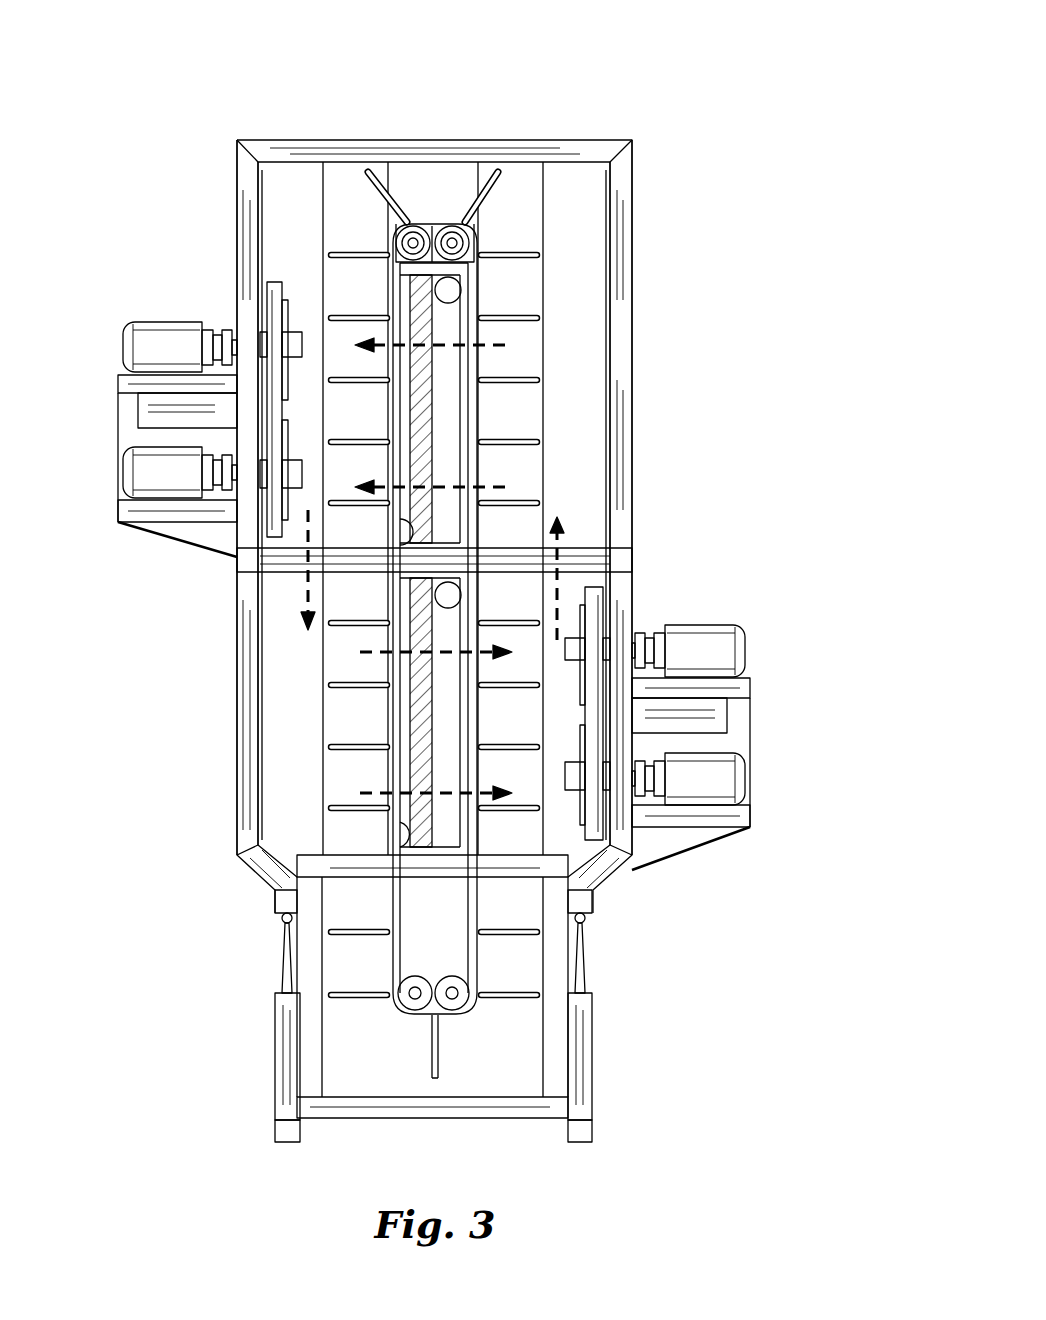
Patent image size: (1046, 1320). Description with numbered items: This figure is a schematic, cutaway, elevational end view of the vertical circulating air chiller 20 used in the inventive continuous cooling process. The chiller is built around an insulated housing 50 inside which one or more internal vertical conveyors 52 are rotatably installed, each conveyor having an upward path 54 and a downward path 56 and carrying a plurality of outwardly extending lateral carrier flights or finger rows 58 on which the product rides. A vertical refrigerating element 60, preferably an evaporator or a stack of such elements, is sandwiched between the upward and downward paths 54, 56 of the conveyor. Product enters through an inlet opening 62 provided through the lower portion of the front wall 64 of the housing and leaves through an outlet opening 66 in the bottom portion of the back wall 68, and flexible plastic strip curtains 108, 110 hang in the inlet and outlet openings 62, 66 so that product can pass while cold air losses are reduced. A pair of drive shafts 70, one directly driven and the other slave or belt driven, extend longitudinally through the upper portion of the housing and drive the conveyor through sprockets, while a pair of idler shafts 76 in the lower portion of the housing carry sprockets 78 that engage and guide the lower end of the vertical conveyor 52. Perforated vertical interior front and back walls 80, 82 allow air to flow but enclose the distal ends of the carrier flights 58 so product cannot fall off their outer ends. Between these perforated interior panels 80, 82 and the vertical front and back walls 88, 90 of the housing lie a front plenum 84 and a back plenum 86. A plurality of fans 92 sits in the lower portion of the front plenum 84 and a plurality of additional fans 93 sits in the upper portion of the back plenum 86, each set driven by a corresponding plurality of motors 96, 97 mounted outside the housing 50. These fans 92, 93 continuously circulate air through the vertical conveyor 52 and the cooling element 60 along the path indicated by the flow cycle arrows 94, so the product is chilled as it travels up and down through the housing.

The apparatus 20 is at (508, 132).
The insulated housing 50 is at (235, 695).
The vertical conveyor 52 is at (392, 635).
The upward path 54 is at (473, 413).
The downward path 56 is at (392, 635).
The carrier flights 58 is at (520, 255).
The vertical refrigerating element 60 is at (420, 727).
The inlet opening 62 is at (592, 933).
The front wall 64 is at (590, 1080).
The outlet opening 66 is at (265, 925).
The back wall 68 is at (275, 1030).
The drive shafts 70 is at (452, 236).
The idler shafts 76 is at (413, 1000).
The sprockets 78 is at (405, 982).
The perforated interior front wall 80 is at (543, 488).
The perforated interior back wall 82 is at (427, 722).
The front plenum 84 is at (578, 510).
The back plenum 86 is at (270, 585).
The vertical front wall of housing 88 is at (605, 200).
The vertical back wall of housing 90 is at (262, 203).
The fans 92 is at (592, 622).
The additional fans 93 is at (262, 300).
The flow cycle arrows 94 is at (375, 342).
The motors 96 is at (710, 640).
The motors 97 is at (160, 330).
The flexible curtain 108 is at (588, 975).
The flexible curtain 110 is at (282, 975).